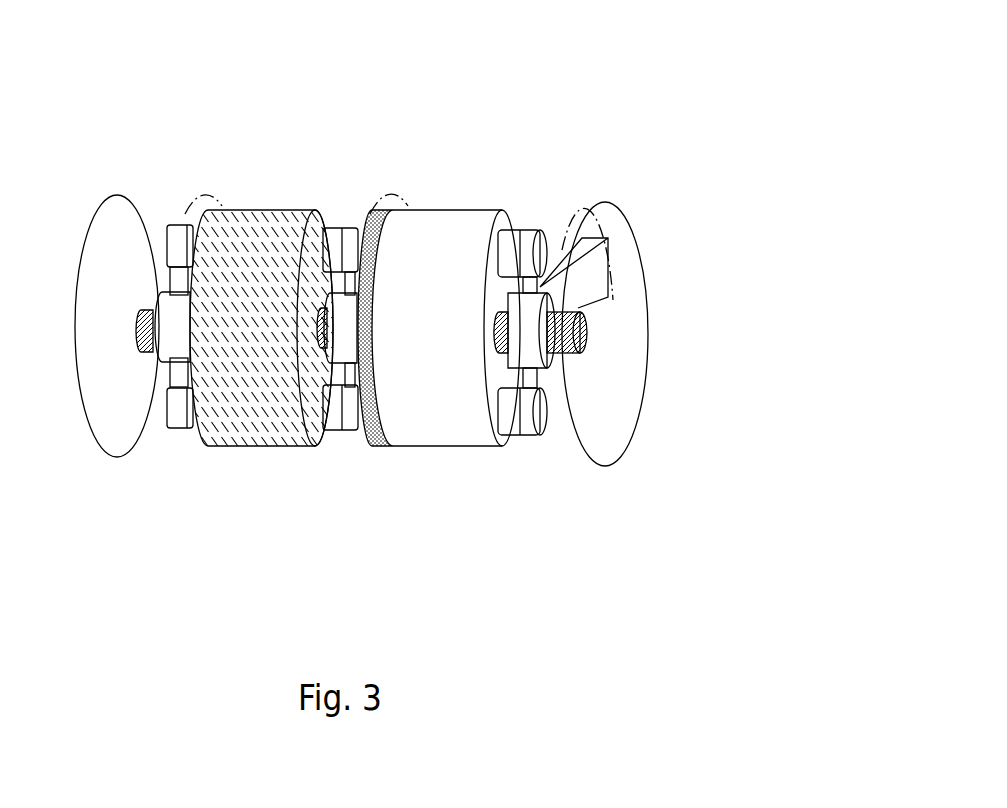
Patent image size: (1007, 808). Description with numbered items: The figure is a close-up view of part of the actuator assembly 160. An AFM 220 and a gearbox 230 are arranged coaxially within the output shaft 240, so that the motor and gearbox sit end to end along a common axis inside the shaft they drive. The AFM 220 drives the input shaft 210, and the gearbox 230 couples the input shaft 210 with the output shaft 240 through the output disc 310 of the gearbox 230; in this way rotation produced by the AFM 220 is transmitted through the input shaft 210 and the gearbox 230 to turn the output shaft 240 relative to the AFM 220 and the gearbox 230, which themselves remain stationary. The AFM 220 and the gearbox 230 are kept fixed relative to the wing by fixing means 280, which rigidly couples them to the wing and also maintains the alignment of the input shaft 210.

The actuator assembly 160 is at (595, 76).
The input shaft 210 is at (143, 355).
The AFM 220 is at (238, 418).
The gearbox 230 is at (472, 420).
The output shaft 240 is at (605, 465).
The fixing means 280 is at (528, 422).
The output disc 310 is at (367, 436).